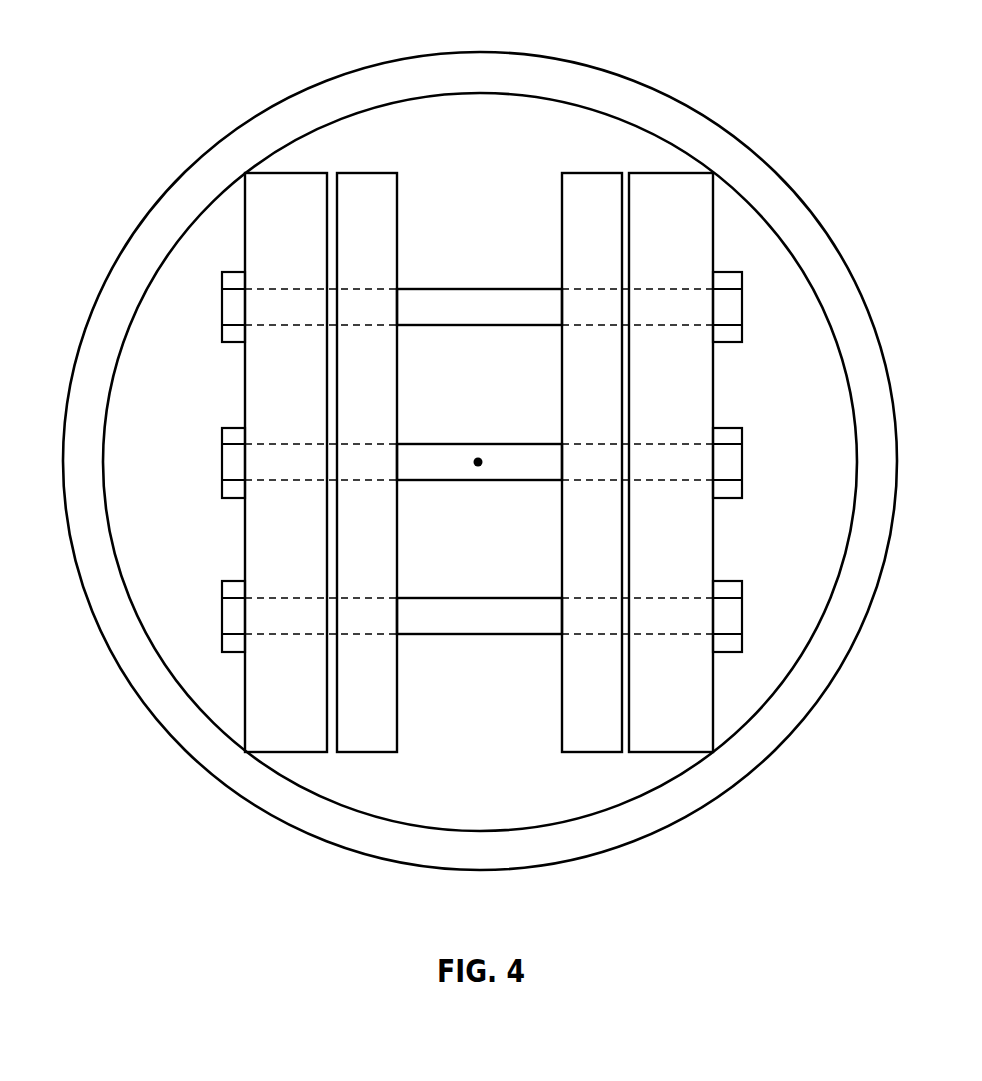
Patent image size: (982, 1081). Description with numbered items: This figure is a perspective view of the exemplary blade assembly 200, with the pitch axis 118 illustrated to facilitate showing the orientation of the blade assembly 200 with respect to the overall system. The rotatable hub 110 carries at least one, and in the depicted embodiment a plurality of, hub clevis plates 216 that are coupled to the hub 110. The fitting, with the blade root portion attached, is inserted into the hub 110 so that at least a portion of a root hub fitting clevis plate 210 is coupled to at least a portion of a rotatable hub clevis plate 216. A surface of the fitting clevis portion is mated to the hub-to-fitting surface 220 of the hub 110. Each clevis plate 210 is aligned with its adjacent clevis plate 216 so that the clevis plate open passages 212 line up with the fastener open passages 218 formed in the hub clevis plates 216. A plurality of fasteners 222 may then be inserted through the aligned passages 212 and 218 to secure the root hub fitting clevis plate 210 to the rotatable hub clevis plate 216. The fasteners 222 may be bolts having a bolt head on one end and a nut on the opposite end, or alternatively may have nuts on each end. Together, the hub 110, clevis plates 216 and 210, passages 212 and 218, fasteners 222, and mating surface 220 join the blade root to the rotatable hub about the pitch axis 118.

The blade assembly 200 is at (126, 62).
The rotatable hub 110 is at (632, 82).
The hub-to-fitting surface 220 is at (483, 72).
The rotatable hub clevis plate 216 is at (267, 188).
The root hub fitting clevis plate 210 is at (383, 196).
The clevis plate open passages 212 is at (373, 295).
The fastener open passages 218 is at (255, 318).
The fasteners 222 is at (513, 318).
The pitch axis 118 is at (480, 458).